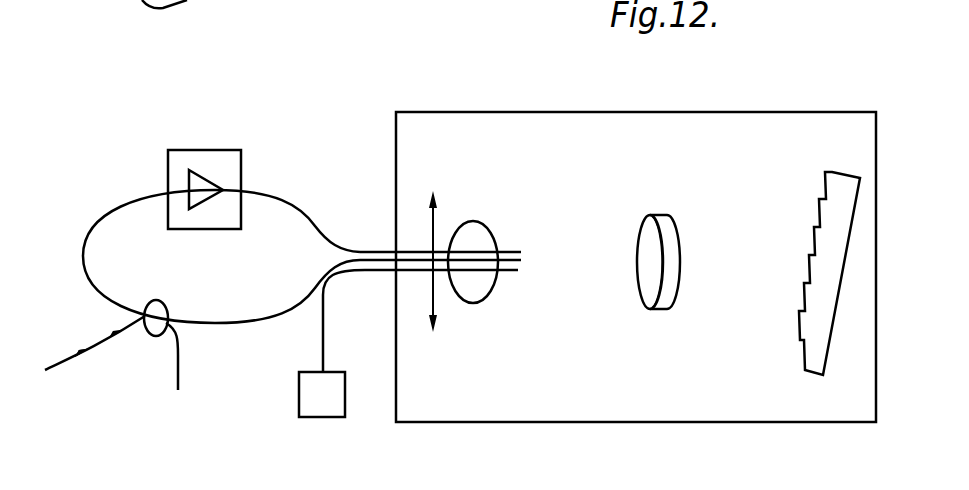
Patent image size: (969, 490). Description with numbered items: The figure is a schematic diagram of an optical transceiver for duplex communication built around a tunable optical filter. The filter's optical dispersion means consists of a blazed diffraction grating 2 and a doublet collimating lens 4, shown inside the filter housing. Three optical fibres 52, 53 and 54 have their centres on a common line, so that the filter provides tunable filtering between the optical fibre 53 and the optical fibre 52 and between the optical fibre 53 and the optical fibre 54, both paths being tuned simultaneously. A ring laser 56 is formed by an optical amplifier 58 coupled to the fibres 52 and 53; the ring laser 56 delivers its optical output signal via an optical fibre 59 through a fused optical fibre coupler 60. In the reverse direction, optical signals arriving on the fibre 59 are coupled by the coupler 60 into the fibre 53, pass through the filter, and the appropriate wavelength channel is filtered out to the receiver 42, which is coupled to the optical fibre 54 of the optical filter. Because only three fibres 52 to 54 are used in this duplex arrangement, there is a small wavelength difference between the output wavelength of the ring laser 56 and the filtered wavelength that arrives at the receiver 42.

The blazed diffraction grating 2 is at (824, 207).
The doublet collimating lens 4 is at (638, 217).
The receiver 42 is at (322, 418).
The optical fibre 52 is at (505, 250).
The optical fibre 53 is at (516, 250).
The optical fibre 54 is at (500, 282).
The ring laser 56 is at (302, 215).
The optical amplifier 58 is at (212, 149).
The optical fibre 59 is at (57, 362).
The fused optical fibre coupler 60 is at (152, 337).